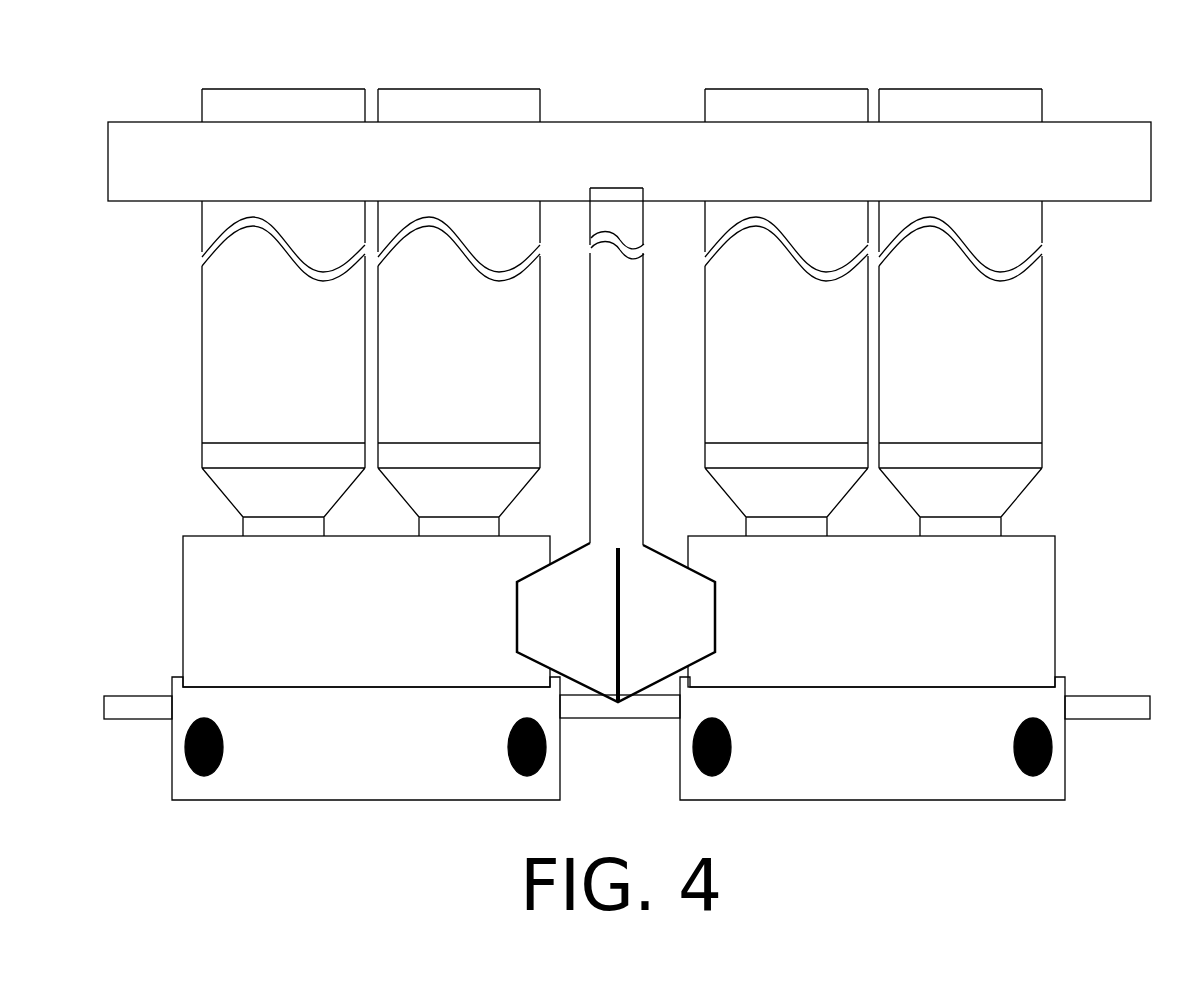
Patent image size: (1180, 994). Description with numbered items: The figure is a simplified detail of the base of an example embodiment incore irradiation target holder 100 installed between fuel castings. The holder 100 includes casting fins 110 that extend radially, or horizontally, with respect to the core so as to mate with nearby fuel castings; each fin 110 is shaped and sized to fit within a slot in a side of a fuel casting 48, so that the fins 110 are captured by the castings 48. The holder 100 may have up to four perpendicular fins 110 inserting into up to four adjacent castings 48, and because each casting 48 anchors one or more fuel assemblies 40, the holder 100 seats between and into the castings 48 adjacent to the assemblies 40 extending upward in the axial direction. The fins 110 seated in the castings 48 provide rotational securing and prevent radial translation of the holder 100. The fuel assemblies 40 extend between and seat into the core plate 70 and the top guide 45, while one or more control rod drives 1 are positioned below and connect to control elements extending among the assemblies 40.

The control rod drive 1 is at (205, 787).
The fuel assembly 40 is at (968, 395).
The top guide 45 is at (1108, 155).
The fuel casting 48 is at (255, 588).
The core plate 70 is at (140, 707).
The incore irradiation target holder 100 is at (623, 223).
The casting fin 110 is at (697, 615).